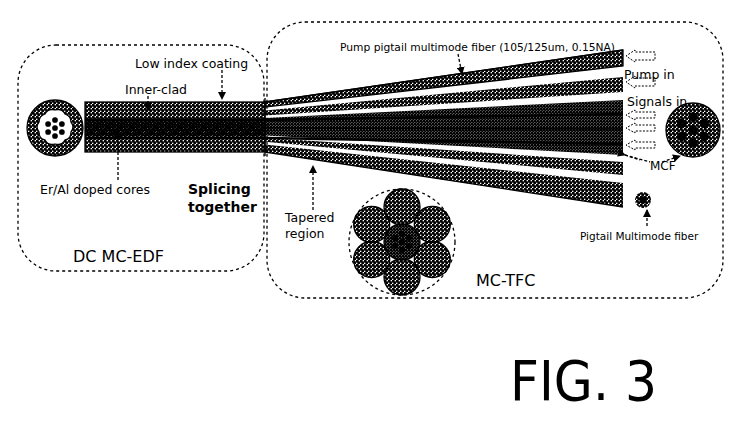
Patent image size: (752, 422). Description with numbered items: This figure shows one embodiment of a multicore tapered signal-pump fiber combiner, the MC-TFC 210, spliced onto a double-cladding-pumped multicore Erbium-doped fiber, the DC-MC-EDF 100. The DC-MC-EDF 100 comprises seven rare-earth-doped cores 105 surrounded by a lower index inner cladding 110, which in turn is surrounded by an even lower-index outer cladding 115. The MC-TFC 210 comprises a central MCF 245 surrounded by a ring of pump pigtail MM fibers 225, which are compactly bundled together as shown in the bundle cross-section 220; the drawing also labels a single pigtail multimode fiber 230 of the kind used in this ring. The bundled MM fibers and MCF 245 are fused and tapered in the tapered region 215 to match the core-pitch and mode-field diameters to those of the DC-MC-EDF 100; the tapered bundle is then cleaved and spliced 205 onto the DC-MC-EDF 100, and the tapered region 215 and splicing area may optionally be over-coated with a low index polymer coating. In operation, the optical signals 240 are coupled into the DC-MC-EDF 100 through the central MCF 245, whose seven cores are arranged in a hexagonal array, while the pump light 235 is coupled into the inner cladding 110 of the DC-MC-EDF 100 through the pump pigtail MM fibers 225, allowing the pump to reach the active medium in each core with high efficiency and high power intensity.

The DC-MC-EDF 100 is at (47, 99).
The rare-earth-doped cores 105 is at (117, 116).
The inner cladding 110 is at (209, 152).
The outer cladding 115 is at (232, 100).
The splice 205 is at (262, 156).
The MC-TFC 210 is at (330, 300).
The tapered region 215 is at (296, 97).
The bundle cross-section 220 is at (458, 233).
The pump pigtail MM fibers 225 is at (439, 78).
The pigtail multimode fiber 230 is at (656, 197).
The pump light 235 is at (653, 53).
The optical signals 240 is at (652, 103).
The MCF 245 is at (706, 153).